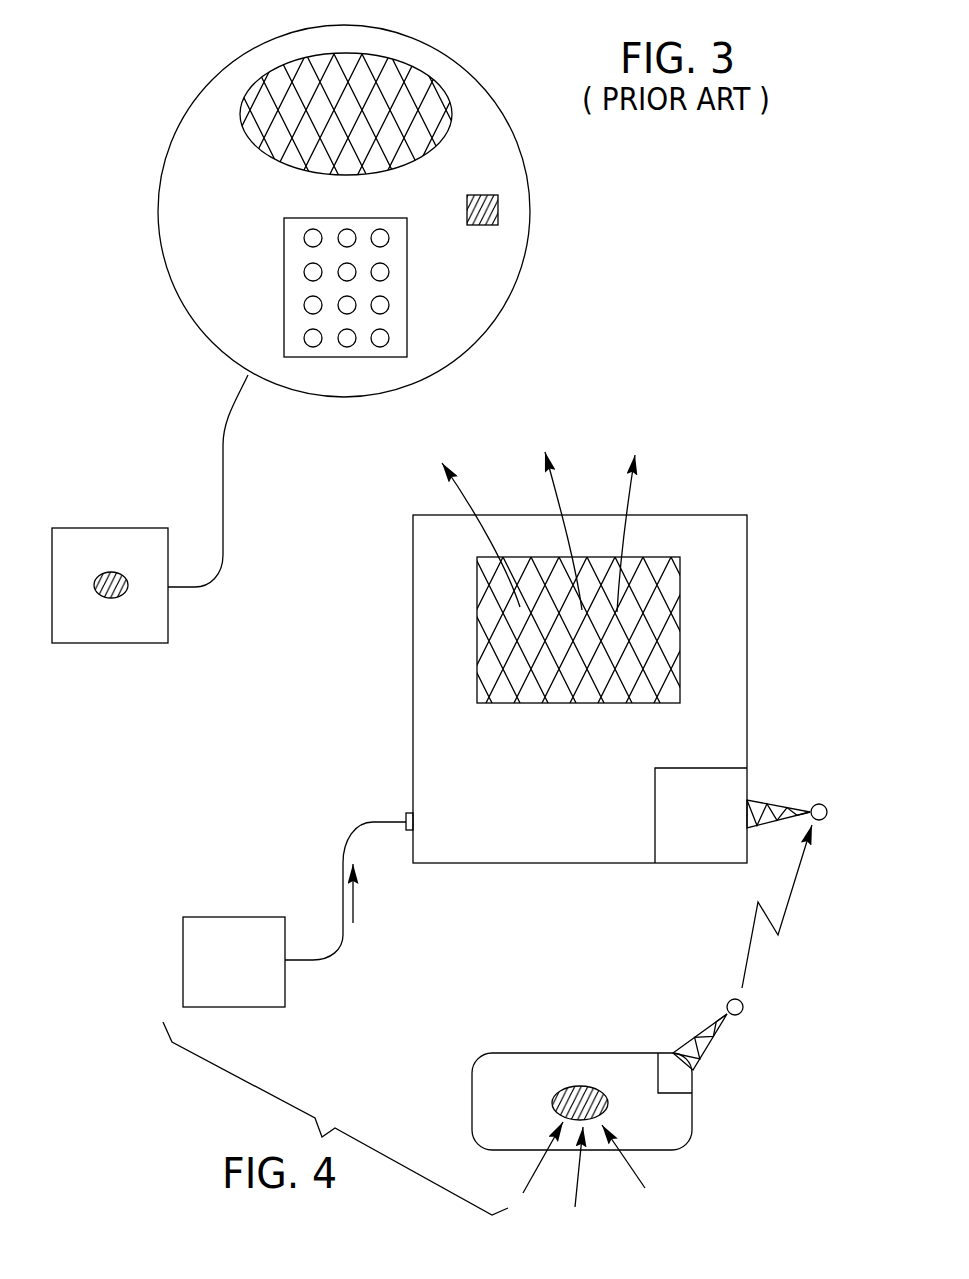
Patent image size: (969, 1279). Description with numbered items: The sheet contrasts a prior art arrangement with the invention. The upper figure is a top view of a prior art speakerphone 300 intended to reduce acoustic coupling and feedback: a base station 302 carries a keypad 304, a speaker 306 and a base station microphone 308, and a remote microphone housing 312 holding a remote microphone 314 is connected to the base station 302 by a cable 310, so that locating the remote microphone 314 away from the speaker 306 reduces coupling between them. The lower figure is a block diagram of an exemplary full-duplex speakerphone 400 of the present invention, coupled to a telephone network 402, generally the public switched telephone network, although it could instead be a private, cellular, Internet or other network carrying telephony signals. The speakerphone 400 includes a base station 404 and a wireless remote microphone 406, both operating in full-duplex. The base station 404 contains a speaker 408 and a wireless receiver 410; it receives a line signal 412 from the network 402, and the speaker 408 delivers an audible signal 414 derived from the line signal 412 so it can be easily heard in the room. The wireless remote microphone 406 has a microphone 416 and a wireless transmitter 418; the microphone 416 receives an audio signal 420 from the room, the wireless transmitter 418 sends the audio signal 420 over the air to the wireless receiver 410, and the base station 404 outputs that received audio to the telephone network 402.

In FIG. 3, the speakerphone 300 is at (110, 70).
In FIG. 3, the base station 302 is at (217, 82).
In FIG. 3, the keypad 304 is at (357, 347).
In FIG. 3, the speaker 306 is at (406, 85).
In FIG. 3, the base station microphone 308 is at (498, 206).
In FIG. 3, the cable 310 is at (223, 508).
In FIG. 3, the remote microphone housing 312 is at (137, 643).
In FIG. 3, the remote microphone 314 is at (100, 573).
In FIG. 4, the full-duplex speakerphone 400 is at (348, 732).
In FIG. 4, the telephone network 402 is at (257, 892).
In FIG. 4, the base station 404 is at (430, 785).
In FIG. 4, the wireless remote microphone 406 is at (473, 1075).
In FIG. 4, the speaker 408 is at (647, 560).
In FIG. 4, the wireless receiver 410 is at (732, 790).
In FIG. 4, the line signal 412 is at (353, 900).
In FIG. 4, the audible signal 414 is at (538, 517).
In FIG. 4, the microphone 416 is at (575, 1088).
In FIG. 4, the wireless transmitter 418 is at (680, 1082).
In FIG. 4, the audio signal 420 is at (584, 1178).